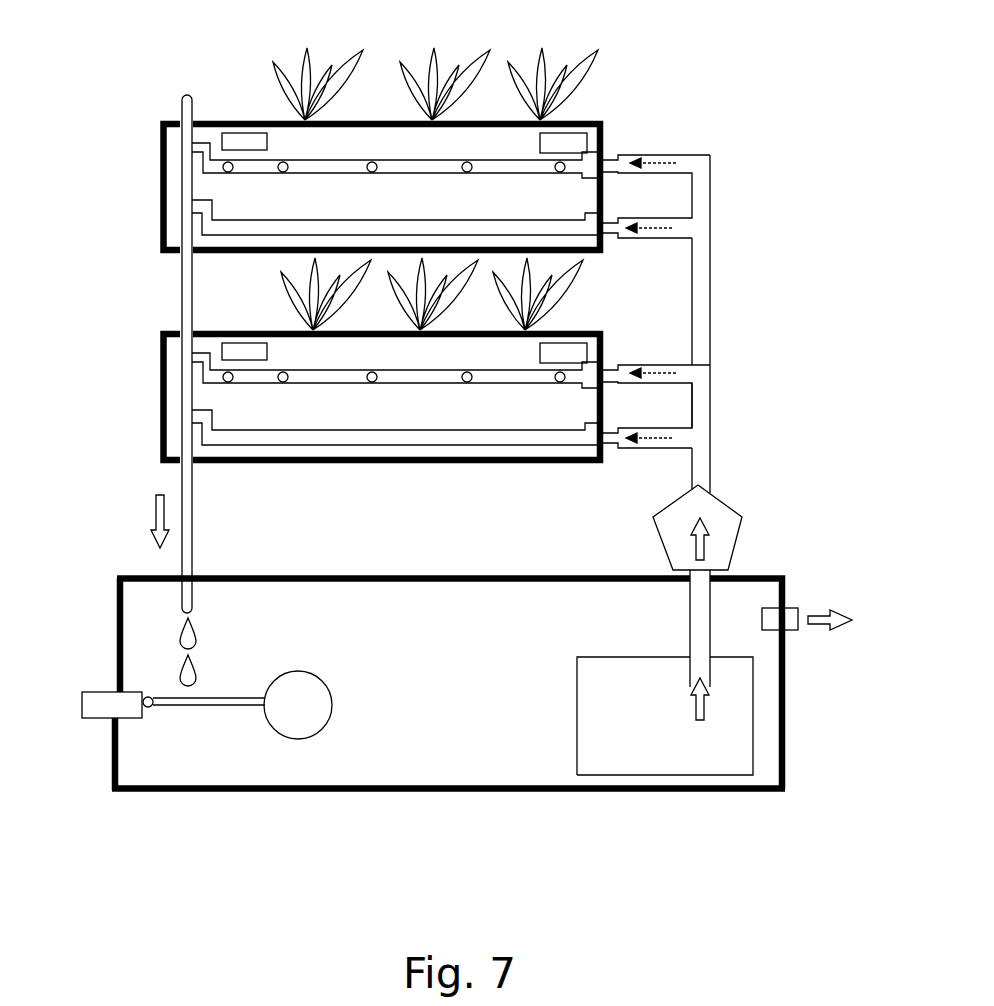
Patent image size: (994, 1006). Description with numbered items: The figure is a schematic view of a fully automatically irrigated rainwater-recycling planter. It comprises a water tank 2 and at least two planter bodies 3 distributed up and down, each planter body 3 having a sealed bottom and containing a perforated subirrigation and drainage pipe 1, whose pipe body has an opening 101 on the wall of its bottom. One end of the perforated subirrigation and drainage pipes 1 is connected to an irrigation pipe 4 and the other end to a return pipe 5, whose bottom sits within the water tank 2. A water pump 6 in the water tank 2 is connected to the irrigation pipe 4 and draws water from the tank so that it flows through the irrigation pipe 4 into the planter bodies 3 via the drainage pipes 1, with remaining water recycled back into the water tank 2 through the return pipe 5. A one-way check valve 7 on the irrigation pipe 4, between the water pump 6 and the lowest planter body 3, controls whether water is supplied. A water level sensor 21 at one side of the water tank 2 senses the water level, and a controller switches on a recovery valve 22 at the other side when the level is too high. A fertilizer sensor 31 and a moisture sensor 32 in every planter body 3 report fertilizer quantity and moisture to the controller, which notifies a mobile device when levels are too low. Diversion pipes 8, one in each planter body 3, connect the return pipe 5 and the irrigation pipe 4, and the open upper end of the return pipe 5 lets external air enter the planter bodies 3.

The perforated subirrigation and drainage pipe 1 is at (327, 173).
The water tank 2 is at (472, 790).
The planter body 3 is at (160, 155).
The irrigation pipe 4 is at (710, 207).
The return pipe 5 is at (183, 490).
The water pump 6 is at (600, 688).
The one-way check valve 7 is at (742, 530).
The diversion pipe 8 is at (437, 438).
The water level sensor 21 is at (117, 692).
The recovery valve 22 is at (798, 630).
The fertilizer sensor 31 is at (243, 133).
The moisture sensor 32 is at (565, 143).
The opening 101 is at (470, 174).